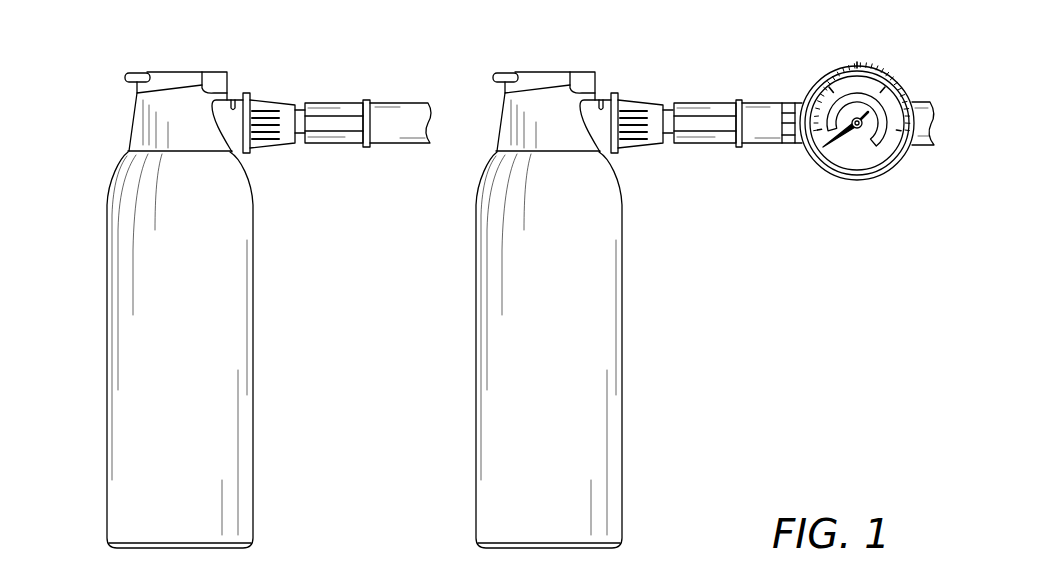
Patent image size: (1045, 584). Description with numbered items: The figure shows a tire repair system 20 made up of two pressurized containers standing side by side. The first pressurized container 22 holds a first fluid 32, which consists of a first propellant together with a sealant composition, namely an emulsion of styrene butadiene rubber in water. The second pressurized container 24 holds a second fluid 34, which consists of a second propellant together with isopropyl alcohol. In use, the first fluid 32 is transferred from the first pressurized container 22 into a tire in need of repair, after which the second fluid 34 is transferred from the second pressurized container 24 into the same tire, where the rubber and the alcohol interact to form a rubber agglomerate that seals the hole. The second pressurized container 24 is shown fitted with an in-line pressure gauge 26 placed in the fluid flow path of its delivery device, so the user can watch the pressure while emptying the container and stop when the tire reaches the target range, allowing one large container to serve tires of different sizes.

The tire repair system 20 is at (102, 70).
The first pressurized container 22 is at (107, 437).
The second pressurized container 24 is at (623, 440).
The in-line pressure gauge 26 is at (861, 66).
The first fluid 32 is at (166, 350).
The second fluid 34 is at (583, 357).